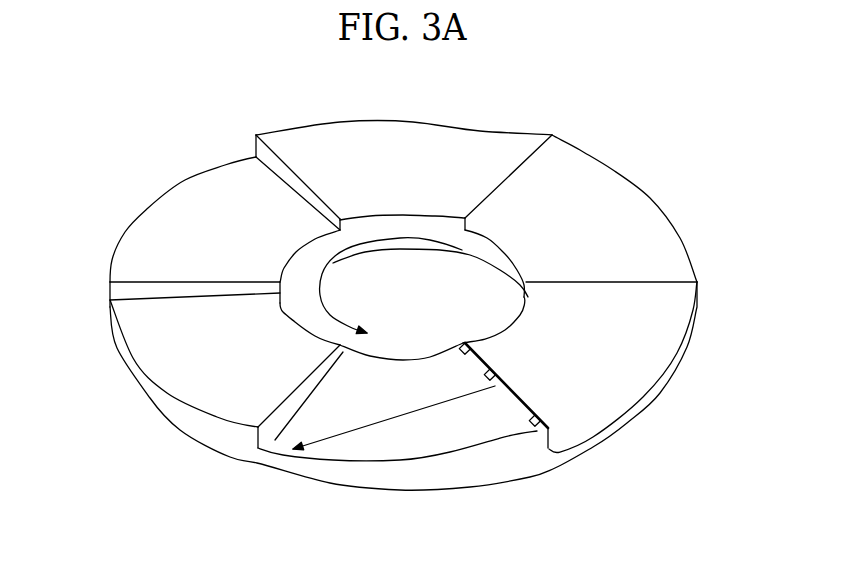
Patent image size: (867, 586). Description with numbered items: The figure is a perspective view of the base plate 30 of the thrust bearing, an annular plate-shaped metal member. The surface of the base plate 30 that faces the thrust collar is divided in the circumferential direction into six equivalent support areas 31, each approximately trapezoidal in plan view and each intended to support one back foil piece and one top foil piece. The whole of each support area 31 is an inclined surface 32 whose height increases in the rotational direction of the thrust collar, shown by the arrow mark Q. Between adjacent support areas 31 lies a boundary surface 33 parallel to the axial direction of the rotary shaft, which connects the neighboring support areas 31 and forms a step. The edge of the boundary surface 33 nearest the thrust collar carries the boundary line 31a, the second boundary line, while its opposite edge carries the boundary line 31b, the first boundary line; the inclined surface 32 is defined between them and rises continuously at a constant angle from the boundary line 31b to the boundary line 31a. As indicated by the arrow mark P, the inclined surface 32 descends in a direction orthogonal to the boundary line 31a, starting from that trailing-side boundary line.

The base plate 30 is at (398, 300).
The support area 31 is at (425, 148).
The boundary line 31a is at (268, 168).
The boundary line 31b is at (297, 197).
The inclined surface 32 is at (373, 158).
The boundary surface 33 is at (305, 172).
The arrow mark P is at (394, 418).
The arrow mark Q is at (391, 295).